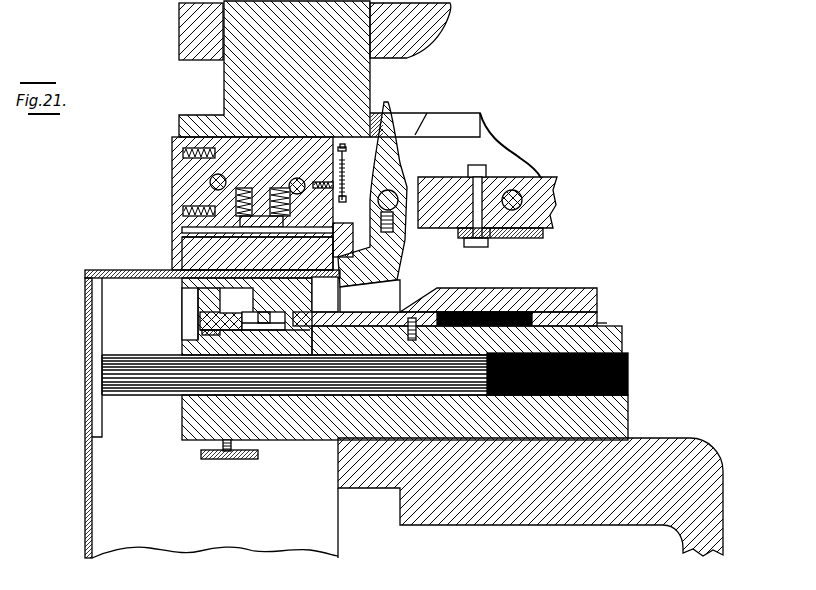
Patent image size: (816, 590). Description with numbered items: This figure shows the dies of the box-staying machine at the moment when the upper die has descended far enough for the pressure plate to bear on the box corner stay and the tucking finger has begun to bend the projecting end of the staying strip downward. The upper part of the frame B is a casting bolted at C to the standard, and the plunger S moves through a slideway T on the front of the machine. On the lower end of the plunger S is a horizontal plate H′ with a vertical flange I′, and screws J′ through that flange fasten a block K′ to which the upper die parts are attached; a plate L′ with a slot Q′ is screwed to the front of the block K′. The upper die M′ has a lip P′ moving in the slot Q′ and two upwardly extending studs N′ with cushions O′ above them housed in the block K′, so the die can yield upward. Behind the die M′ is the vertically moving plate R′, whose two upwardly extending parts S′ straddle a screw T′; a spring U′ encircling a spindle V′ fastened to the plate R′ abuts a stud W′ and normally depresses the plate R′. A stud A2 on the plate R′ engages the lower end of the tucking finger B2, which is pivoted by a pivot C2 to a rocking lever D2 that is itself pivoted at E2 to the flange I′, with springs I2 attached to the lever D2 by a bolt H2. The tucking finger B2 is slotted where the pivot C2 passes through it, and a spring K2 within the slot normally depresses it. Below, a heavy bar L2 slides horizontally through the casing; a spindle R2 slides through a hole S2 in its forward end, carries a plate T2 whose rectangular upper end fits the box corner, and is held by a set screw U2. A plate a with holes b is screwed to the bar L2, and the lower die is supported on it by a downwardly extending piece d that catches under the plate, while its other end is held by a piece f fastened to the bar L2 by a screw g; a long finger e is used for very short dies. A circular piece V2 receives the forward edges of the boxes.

The slideway T is at (185, 31).
The plunger S is at (237, 76).
The upwardly extending parts S′ is at (363, 124).
The upper part of the frame B is at (530, 280).
The horizontal plate H′ is at (446, 122).
The vertical flange I′ is at (510, 145).
The block K′ is at (182, 163).
The plate L′ is at (176, 177).
The screws J′ is at (227, 180).
The stud W′ is at (340, 155).
The spindle V′ is at (354, 150).
The screw or bolt T′ is at (351, 175).
The spring U′ is at (355, 184).
The vertically moving plate R′ is at (328, 190).
The cushions O′ is at (263, 202).
The upwardly extending studs or fingers N′ is at (275, 226).
The slot Q′ is at (182, 230).
The lip P′ is at (182, 240).
The upper die M′ is at (182, 255).
The stud A2 is at (346, 231).
The spring K2 is at (400, 238).
The pivot C2 is at (403, 190).
The tucking finger B2 is at (392, 271).
The pivot E2 is at (548, 183).
The bolt H2 is at (478, 168).
The rocking lever D2 is at (508, 240).
The springs I2 is at (503, 241).
The plate T2 is at (97, 414).
The bolts C is at (402, 316).
The circular piece of metal V2 is at (403, 395).
The piece of metal f is at (197, 303).
The screw g is at (192, 333).
The plate a is at (235, 300).
The holes b is at (258, 318).
The long finger or wire e is at (268, 330).
The downwardly extending piece of metal d is at (288, 330).
The spindle R2 is at (365, 375).
The hole S2 is at (598, 352).
The heavy bar L2 is at (318, 441).
The set screw U2 is at (229, 460).